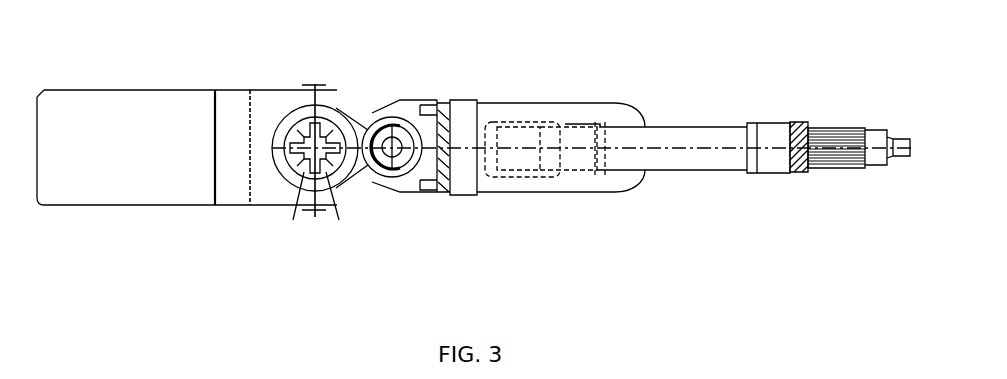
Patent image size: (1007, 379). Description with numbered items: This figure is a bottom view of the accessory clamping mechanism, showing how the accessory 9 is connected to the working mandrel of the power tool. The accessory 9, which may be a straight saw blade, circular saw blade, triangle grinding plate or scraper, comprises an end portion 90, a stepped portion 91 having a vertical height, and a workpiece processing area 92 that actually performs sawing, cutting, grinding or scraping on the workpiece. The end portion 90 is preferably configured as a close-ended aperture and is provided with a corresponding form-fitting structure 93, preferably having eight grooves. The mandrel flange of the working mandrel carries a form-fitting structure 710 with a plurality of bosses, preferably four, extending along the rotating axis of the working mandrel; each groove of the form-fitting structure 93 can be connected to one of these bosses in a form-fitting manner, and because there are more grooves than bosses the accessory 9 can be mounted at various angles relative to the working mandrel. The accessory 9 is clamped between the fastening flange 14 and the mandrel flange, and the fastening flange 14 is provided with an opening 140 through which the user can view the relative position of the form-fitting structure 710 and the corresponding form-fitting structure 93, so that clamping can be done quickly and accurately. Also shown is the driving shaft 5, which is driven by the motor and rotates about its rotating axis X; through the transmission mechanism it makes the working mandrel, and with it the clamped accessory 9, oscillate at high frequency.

The accessory 9 is at (202, 161).
The workpiece processing area 92 is at (48, 90).
The stepped portion 91 is at (223, 132).
The form-fitting structure 93 is at (297, 107).
The end portion 90 is at (337, 102).
The form-fitting structure 710 is at (313, 172).
The opening 140 is at (330, 178).
The fastening flange 14 is at (350, 173).
The driving shaft 5 is at (550, 137).
The rotating axis X is at (627, 142).